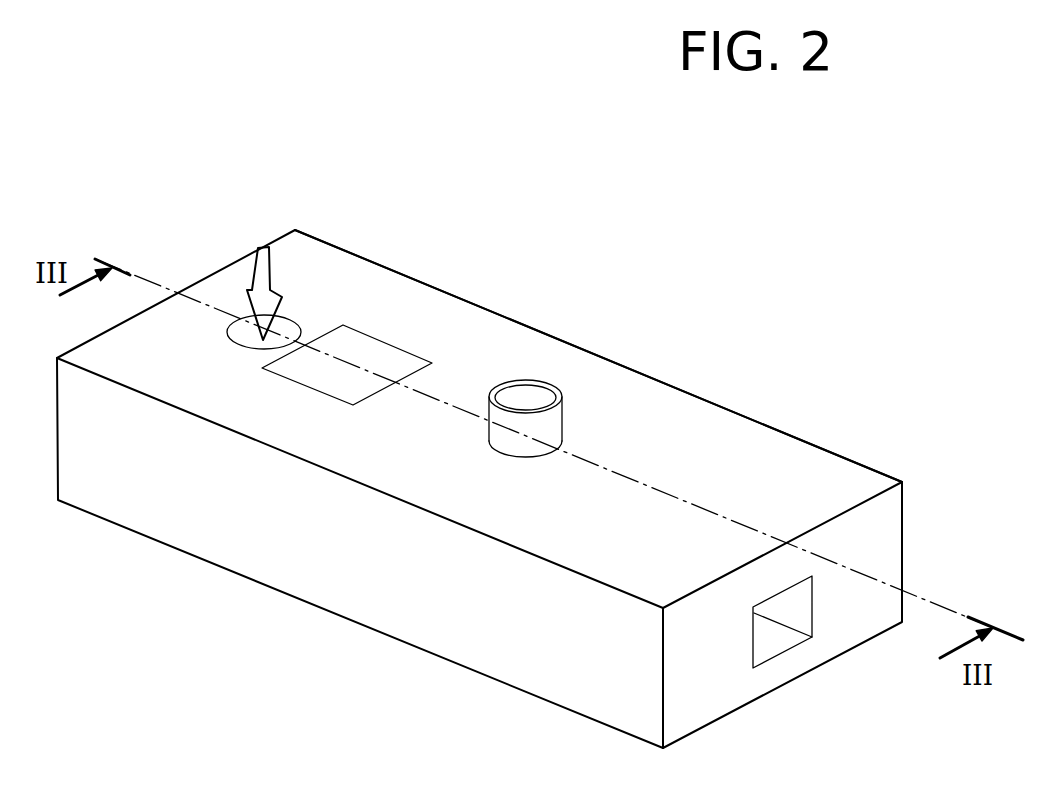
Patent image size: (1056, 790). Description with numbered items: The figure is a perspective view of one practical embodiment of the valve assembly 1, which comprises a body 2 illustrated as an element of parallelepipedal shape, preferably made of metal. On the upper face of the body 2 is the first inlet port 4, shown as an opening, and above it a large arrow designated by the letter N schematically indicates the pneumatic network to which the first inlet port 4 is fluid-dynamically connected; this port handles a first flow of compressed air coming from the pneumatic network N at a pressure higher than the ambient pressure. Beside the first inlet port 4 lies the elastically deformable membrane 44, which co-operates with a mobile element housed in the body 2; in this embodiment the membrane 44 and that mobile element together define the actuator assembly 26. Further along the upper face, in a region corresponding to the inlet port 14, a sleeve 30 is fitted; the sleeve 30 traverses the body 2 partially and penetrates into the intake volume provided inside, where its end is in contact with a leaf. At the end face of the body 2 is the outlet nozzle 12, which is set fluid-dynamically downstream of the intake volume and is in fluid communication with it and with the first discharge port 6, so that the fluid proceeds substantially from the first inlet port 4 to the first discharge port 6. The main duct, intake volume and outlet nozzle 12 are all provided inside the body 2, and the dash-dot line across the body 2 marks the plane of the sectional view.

The valve assembly 1 is at (719, 376).
The body 2 is at (797, 431).
The first inlet port 4 is at (281, 333).
The pneumatic network N is at (256, 276).
The elastically deformable membrane 44 is at (368, 355).
The actuator assembly 26 is at (417, 344).
The inlet port 14 is at (541, 385).
The sleeve 30 is at (562, 420).
The outlet nozzle 12 is at (787, 603).
The first discharge port 6 is at (768, 634).